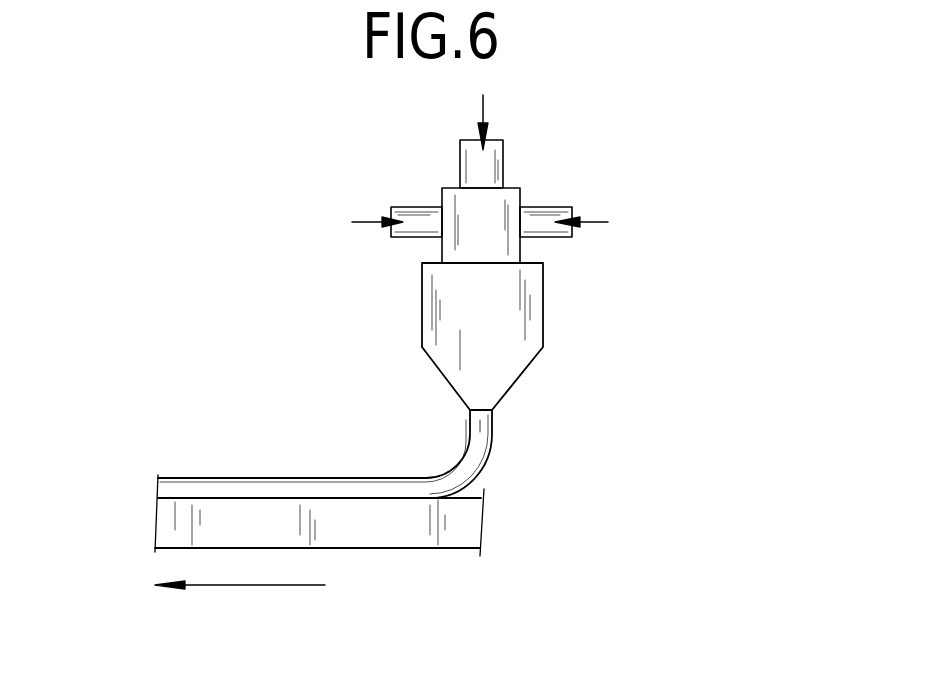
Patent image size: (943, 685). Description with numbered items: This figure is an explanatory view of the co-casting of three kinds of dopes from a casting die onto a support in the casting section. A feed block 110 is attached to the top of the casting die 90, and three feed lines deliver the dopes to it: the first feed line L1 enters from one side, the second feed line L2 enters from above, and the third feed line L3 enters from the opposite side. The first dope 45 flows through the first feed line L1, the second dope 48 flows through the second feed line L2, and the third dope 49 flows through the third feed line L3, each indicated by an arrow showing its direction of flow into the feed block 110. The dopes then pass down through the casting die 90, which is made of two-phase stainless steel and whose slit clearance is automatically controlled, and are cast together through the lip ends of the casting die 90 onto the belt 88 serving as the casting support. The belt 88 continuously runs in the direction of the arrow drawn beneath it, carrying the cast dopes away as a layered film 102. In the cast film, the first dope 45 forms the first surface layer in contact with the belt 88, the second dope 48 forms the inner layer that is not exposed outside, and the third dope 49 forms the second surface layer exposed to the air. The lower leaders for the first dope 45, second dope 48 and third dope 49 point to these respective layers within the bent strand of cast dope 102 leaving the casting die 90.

The second dope 48 is at (483, 112).
The third dope 49 is at (357, 221).
The first dope 45 is at (600, 221).
The second feed line L2 is at (460, 163).
The third feed line L3 is at (415, 238).
The first feed line L1 is at (552, 237).
The feed block 110 is at (520, 188).
The casting die 90 is at (543, 300).
The extruded strand 102 is at (270, 478).
The belt 88 is at (407, 548).